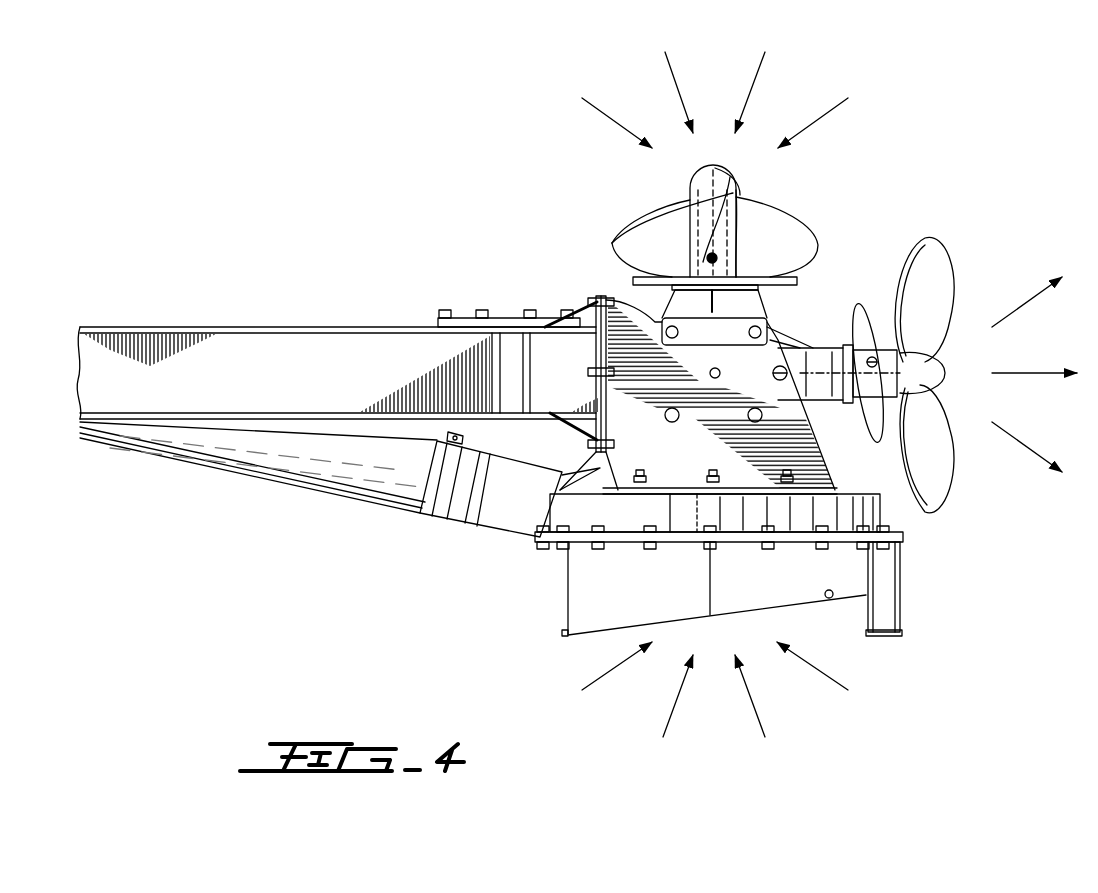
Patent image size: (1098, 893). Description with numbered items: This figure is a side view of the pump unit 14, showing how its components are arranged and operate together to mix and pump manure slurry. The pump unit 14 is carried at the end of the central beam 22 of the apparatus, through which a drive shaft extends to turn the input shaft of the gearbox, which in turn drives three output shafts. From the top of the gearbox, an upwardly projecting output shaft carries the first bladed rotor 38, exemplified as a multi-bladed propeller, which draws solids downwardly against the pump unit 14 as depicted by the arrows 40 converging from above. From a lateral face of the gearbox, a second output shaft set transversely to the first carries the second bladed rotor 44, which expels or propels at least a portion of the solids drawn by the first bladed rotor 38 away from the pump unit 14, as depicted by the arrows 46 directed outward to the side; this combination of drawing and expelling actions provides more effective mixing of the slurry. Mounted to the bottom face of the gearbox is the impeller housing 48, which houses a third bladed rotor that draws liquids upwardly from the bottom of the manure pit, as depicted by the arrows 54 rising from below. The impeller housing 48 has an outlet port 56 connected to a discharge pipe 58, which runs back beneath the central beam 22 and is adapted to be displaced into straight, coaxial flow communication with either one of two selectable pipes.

The pump unit 14 is at (894, 182).
The central beam 22 is at (365, 348).
The first bladed rotor 38 is at (620, 250).
The arrows 40 is at (667, 72).
The second bladed rotor 44 is at (947, 270).
The arrows 46 is at (1027, 303).
The impeller housing 48 is at (538, 560).
The arrows 54 is at (668, 720).
The outlet port 56 is at (482, 508).
The discharge pipe 58 is at (290, 457).